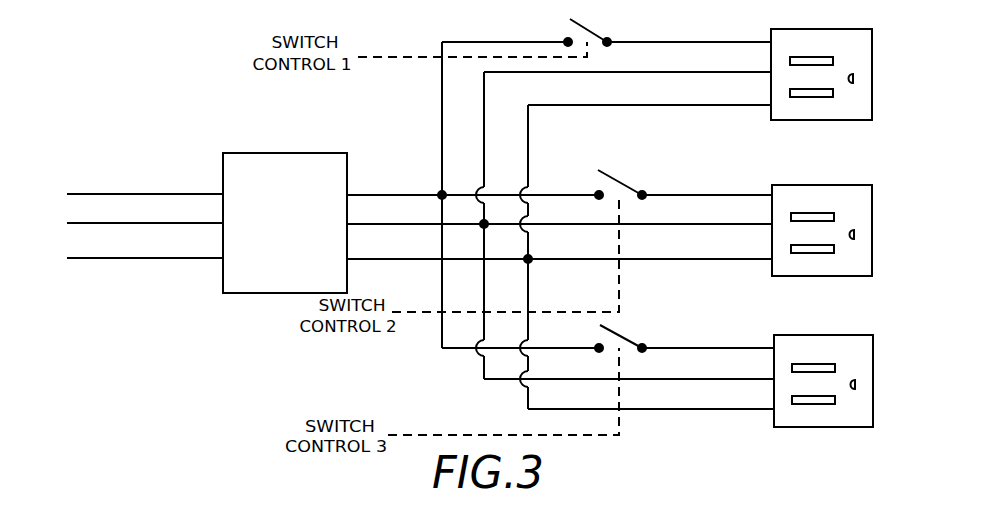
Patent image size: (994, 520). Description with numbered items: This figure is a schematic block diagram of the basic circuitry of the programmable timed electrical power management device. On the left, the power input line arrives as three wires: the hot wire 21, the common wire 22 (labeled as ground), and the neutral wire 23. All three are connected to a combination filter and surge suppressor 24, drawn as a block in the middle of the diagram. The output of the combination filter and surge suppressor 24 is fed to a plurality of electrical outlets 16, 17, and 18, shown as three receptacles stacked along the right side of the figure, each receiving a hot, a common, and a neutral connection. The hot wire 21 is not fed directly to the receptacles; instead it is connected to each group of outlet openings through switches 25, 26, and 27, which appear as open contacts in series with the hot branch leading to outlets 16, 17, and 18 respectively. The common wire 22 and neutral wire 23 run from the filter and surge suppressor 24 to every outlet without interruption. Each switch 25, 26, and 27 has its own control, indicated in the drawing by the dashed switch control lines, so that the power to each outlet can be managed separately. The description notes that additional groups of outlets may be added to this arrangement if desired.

The electrical outlet 16 is at (847, 427).
The electrical outlet 17 is at (842, 276).
The electrical outlet 18 is at (811, 120).
The hot wire 21 is at (68, 193).
The common wire 22 is at (68, 222).
The neutral wire 23 is at (68, 257).
The combination filter and surge suppressor 24 is at (223, 280).
The switch 25 is at (623, 337).
The switch 26 is at (620, 179).
The switch 27 is at (579, 23).